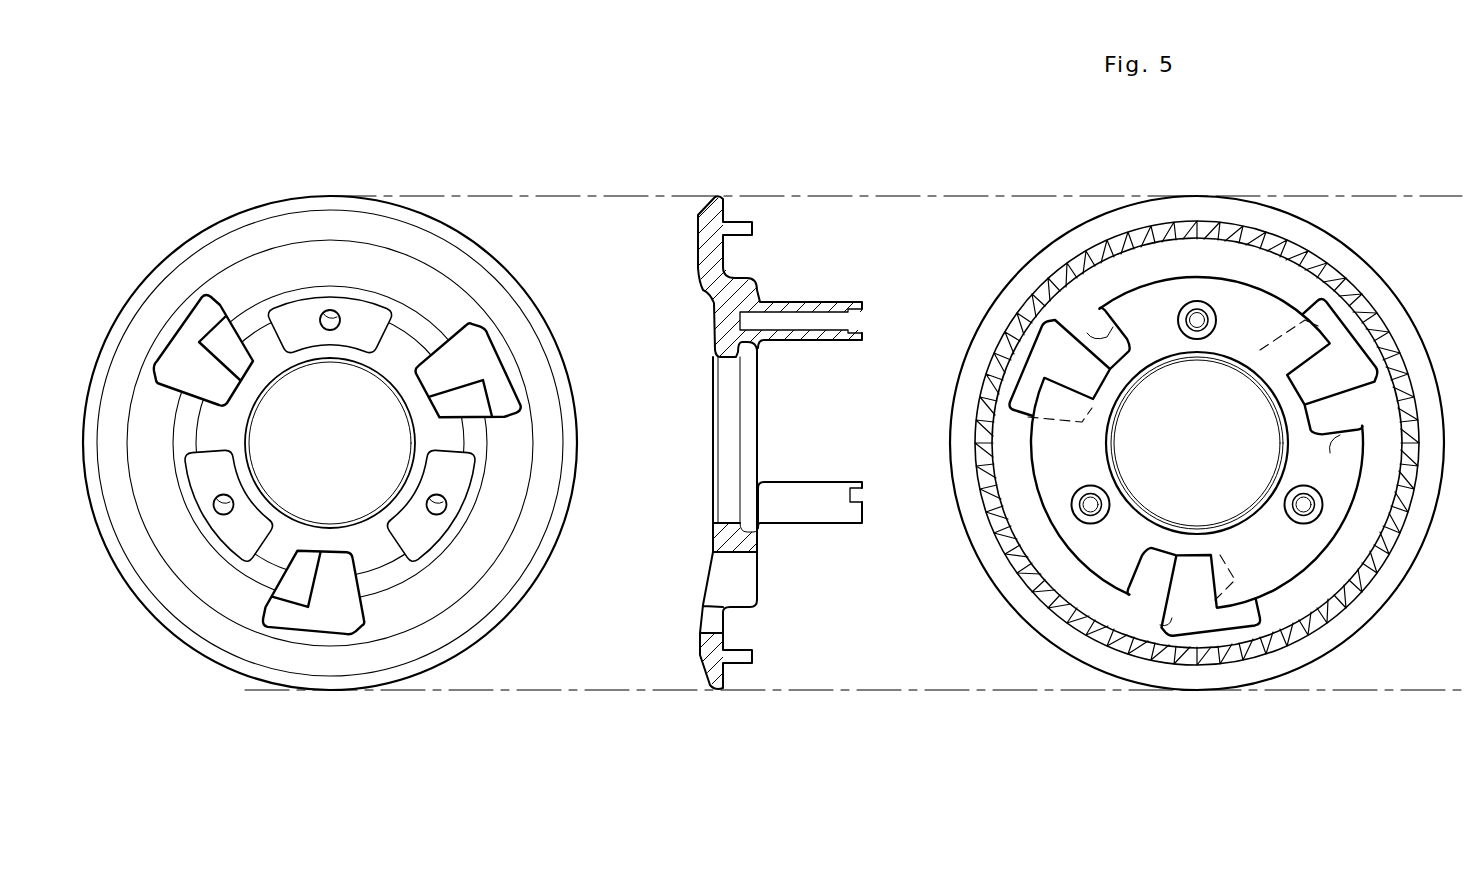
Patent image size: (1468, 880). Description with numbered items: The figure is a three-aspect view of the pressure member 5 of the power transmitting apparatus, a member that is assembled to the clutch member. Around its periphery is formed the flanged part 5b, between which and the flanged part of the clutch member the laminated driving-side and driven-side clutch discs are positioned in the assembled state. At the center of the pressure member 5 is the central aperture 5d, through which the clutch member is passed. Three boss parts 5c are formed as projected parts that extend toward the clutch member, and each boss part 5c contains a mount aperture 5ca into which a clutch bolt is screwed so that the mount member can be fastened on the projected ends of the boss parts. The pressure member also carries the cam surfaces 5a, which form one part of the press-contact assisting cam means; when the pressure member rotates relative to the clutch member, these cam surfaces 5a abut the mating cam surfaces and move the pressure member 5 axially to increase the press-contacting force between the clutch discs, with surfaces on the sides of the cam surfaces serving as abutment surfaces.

The pressure member 5 is at (470, 230).
The cam surface 5a is at (240, 335).
The flanged part 5b is at (287, 205).
The boss part 5c is at (831, 314).
The mount aperture 5ca is at (331, 318).
The central aperture 5d is at (372, 396).